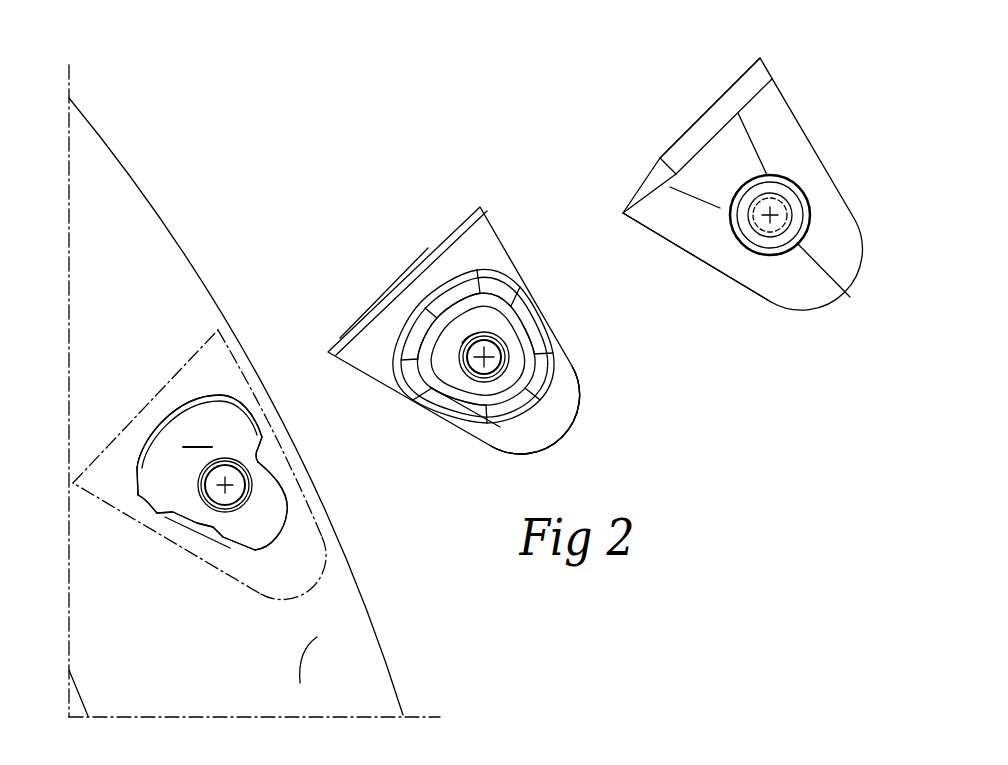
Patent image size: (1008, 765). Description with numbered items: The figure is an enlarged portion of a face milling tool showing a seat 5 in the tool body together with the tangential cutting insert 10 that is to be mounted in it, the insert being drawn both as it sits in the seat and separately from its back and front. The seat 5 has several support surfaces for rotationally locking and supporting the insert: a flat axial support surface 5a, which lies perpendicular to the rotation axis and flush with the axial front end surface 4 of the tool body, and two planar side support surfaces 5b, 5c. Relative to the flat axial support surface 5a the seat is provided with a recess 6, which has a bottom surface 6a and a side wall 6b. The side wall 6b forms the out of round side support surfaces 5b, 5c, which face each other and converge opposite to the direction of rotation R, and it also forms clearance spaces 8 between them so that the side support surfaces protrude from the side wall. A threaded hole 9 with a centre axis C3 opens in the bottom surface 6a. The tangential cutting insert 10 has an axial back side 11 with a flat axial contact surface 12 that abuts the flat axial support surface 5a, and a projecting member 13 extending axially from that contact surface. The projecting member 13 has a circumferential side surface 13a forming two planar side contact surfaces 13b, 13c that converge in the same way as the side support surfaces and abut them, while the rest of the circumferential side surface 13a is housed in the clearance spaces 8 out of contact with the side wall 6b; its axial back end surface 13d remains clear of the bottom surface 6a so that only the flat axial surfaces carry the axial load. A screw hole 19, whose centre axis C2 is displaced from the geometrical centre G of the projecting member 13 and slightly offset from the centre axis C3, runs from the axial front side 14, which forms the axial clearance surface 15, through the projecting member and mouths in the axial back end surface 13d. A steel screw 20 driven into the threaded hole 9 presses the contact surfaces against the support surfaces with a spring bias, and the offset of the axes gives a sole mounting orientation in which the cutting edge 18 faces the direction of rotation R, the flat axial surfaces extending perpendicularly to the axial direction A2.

The axial front end surface 4 is at (147, 247).
The seat 5 is at (128, 433).
The flat axial support surface 5a is at (197, 363).
The side support surface 5b is at (207, 513).
The side support surface 5c is at (256, 457).
The recess 6 is at (137, 474).
The bottom surface 6a is at (197, 434).
The side wall 6b is at (152, 512).
The clearance spaces 8 is at (163, 448).
The threaded hole 9 is at (230, 473).
The centre axis of the threaded hole C3 is at (230, 490).
The tangential cutting insert 10 is at (410, 230).
The axial back side 11 is at (590, 400).
The flat axial contact surface 12 is at (460, 250).
The projecting member 13 is at (495, 280).
The circumferential side surface 13a is at (440, 323).
The side contact surface 13b is at (527, 330).
The side contact surface 13c is at (448, 397).
The axial back end surface 13d is at (473, 313).
The centre axis of the screw hole C2 is at (547, 308).
The axial direction A2 is at (490, 350).
The geometrical centre of the projecting member G is at (472, 342).
The axial front side 14 is at (830, 277).
The axial clearance surface 15 is at (767, 277).
The cutting edge 18 is at (700, 117).
The screw hole 19 is at (773, 173).
The screw 20 is at (797, 222).
The direction of rotation R is at (302, 597).